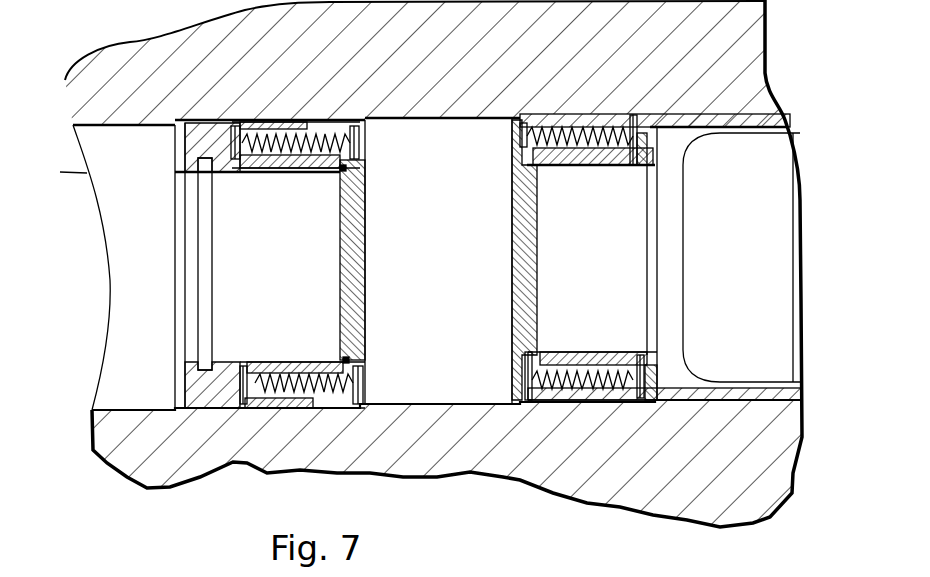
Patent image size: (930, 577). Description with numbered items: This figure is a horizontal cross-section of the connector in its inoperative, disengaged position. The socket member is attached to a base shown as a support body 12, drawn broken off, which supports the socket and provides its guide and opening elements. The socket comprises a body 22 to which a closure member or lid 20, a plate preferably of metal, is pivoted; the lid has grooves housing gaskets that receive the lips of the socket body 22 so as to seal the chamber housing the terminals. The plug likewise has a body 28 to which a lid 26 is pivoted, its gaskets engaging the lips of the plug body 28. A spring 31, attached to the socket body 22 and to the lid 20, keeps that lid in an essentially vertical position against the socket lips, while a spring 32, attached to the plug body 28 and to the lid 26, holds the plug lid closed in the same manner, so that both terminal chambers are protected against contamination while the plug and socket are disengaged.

The support body 12 is at (520, 483).
The closure member or lid 20 is at (353, 252).
The socket body 22 is at (185, 142).
The closure member or lid 26 is at (527, 215).
The plug body 28 is at (617, 353).
The spring 31 is at (247, 167).
The spring 32 is at (583, 140).